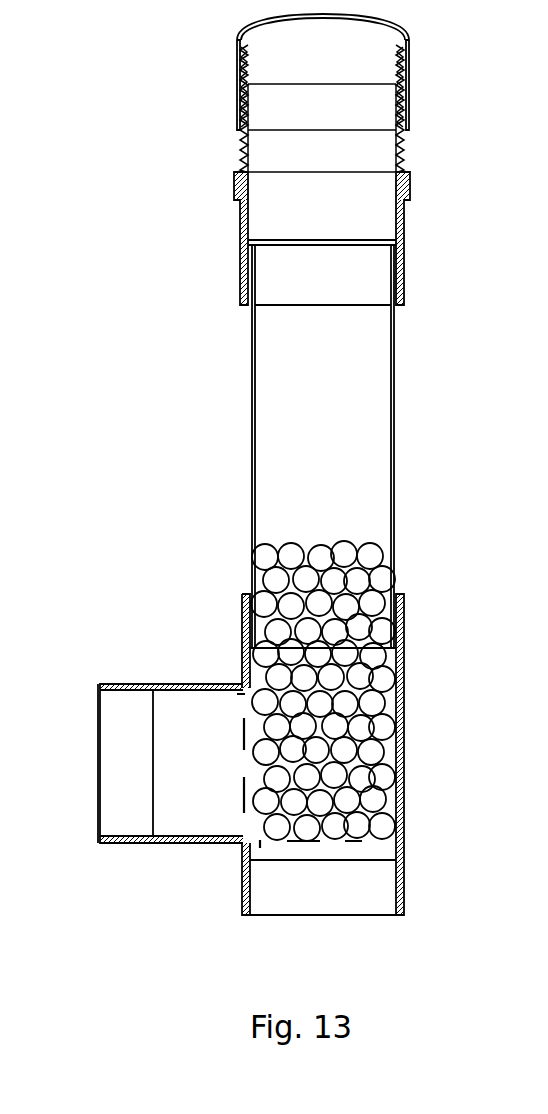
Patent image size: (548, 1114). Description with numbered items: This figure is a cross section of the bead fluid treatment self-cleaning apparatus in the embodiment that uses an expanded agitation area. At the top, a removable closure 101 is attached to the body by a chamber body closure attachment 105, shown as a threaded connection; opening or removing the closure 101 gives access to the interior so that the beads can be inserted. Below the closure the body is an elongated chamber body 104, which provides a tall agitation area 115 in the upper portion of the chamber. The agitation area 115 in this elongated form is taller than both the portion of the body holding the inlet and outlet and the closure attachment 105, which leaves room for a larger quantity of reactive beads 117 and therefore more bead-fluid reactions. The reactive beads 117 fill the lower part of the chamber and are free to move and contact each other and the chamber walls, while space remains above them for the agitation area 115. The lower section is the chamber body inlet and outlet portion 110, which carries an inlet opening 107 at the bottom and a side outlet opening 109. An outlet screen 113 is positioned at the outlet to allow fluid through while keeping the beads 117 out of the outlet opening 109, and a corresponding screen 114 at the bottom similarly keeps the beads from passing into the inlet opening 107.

The removable closure 101 is at (380, 21).
The chamber body closure attachment 105 is at (395, 143).
The agitation area 115 is at (253, 378).
The elongated chamber body 104 is at (253, 523).
The reactive bead 117 is at (388, 521).
The chamber body inlet and outlet portion 110 is at (402, 762).
The outlet opening 109 is at (128, 735).
The outlet screen 113 is at (243, 732).
The bottom screen 114 is at (380, 850).
The inlet opening 107 is at (380, 930).